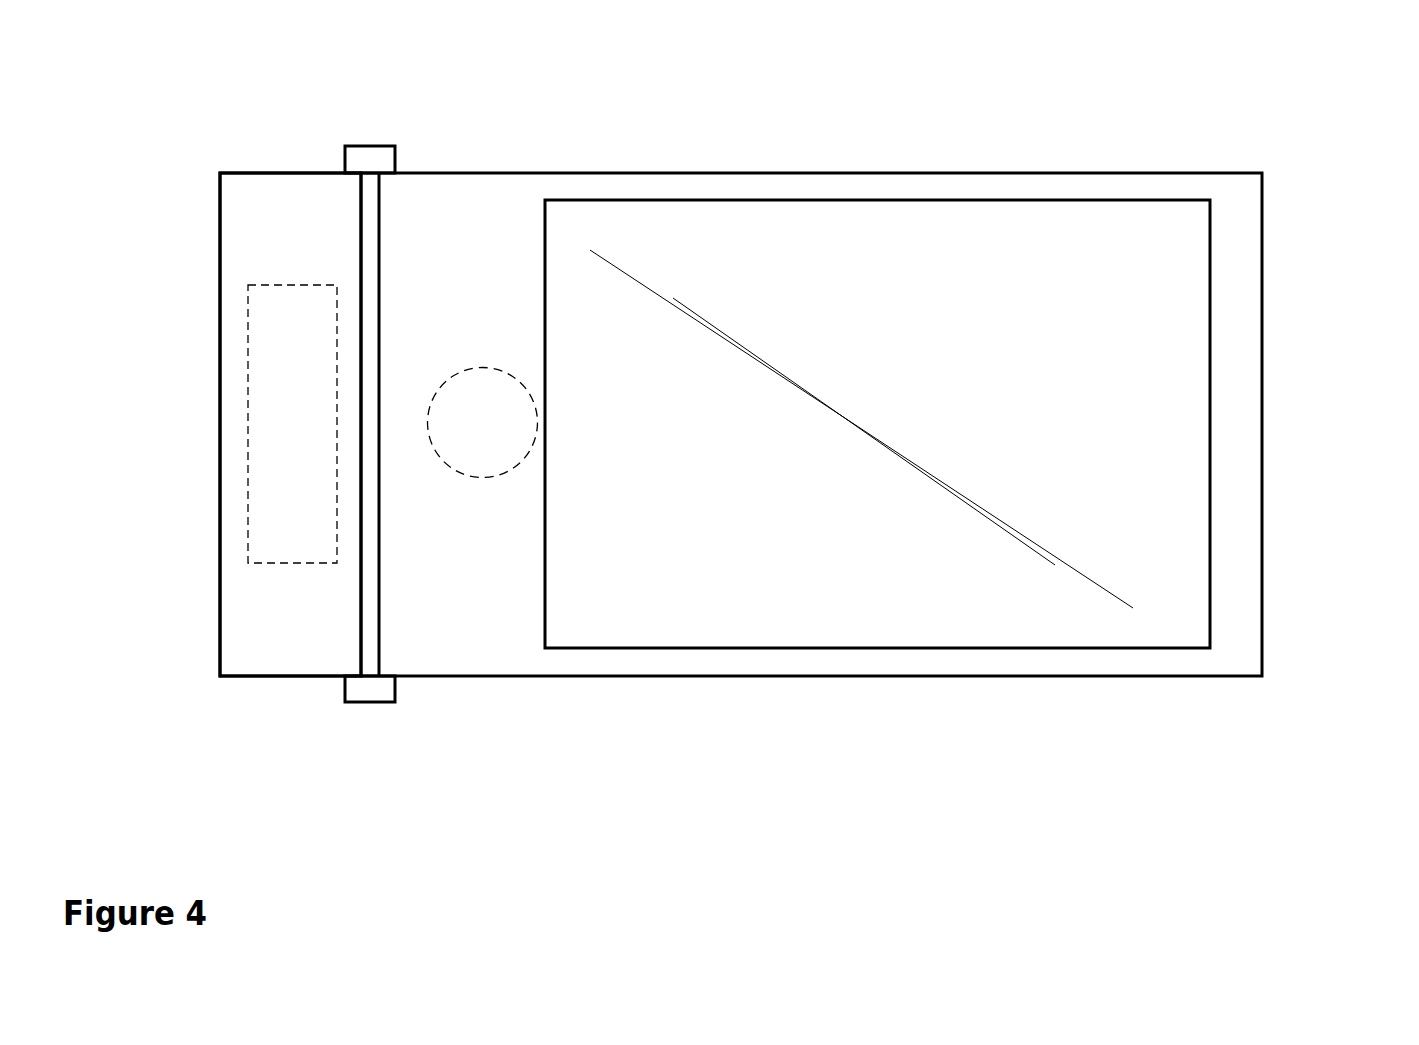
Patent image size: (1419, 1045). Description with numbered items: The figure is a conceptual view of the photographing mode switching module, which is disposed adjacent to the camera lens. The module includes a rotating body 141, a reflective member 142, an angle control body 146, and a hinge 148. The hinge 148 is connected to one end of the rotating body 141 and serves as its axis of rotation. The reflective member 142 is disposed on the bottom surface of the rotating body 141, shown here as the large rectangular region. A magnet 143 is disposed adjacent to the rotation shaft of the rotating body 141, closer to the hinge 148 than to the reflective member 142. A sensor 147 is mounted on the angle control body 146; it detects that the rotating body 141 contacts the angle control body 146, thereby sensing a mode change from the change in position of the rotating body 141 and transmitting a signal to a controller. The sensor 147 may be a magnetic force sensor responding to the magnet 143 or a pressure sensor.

The rotating body 141 is at (1250, 338).
The reflective member 142 is at (797, 625).
The magnet 143 is at (488, 460).
The angle control body 146 is at (265, 612).
The sensor 147 is at (262, 347).
The hinge 148 is at (371, 146).